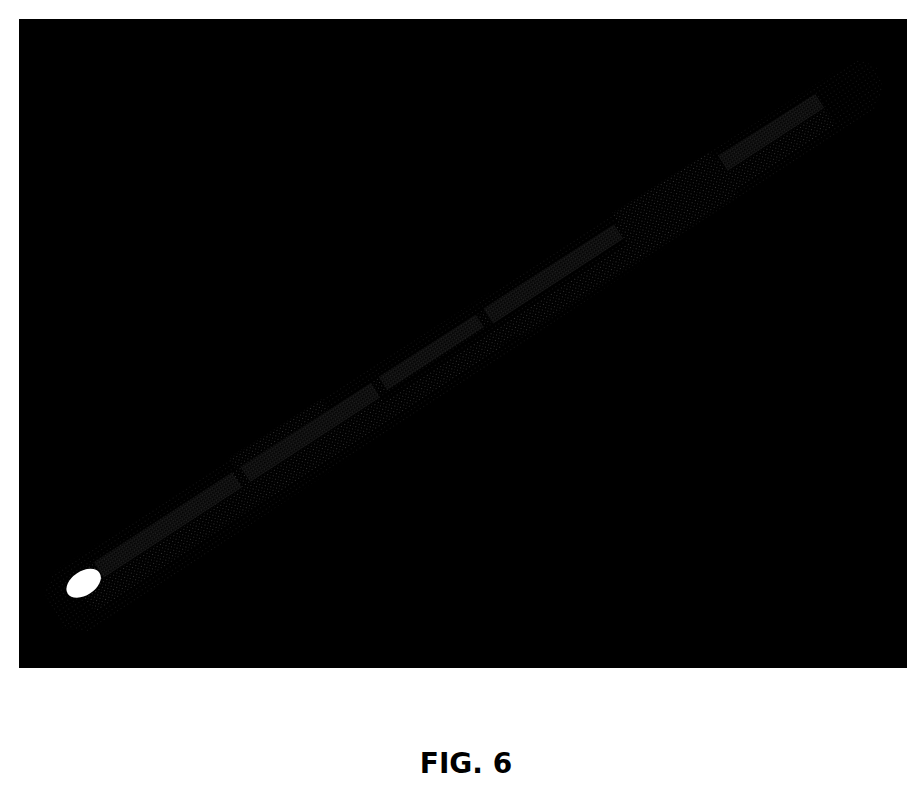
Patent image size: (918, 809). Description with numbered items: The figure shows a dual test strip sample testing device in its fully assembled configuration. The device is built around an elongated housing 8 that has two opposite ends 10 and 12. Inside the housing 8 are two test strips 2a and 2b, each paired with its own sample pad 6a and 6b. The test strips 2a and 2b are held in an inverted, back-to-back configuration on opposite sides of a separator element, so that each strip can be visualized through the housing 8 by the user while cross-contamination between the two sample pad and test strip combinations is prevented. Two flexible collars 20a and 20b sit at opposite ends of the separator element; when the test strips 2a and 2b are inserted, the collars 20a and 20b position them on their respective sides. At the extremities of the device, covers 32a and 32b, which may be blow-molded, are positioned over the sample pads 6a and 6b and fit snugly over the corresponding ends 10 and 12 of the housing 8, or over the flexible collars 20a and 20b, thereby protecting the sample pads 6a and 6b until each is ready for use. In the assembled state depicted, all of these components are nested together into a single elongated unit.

The test strip 2a is at (432, 335).
The test strip 2b is at (507, 343).
The sample pad 6a is at (163, 563).
The sample pad 6b is at (807, 143).
The housing 8 is at (465, 310).
The end 10 is at (293, 493).
The end 12 is at (736, 205).
The flexible collar 20a is at (252, 452).
The flexible collar 20b is at (682, 162).
The cover 32a is at (122, 532).
The cover 32b is at (793, 86).